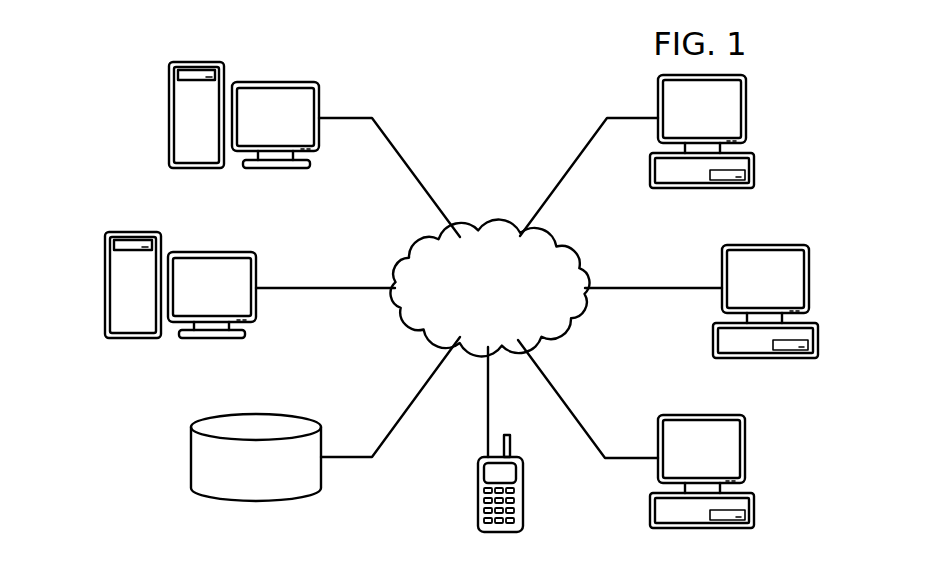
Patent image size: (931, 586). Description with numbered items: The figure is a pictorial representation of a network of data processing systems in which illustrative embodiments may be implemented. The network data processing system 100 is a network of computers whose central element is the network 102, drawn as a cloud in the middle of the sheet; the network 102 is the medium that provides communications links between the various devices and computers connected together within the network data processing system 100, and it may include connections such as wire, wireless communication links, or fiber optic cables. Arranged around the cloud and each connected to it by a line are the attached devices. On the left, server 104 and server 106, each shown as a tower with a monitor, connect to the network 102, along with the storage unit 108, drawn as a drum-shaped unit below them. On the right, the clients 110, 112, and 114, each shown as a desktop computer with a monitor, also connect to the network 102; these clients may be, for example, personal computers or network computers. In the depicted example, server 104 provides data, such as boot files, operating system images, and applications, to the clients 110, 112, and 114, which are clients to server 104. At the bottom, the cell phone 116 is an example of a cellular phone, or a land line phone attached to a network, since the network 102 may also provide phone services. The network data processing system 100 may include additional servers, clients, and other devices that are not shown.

The network data processing system 100 is at (369, 91).
The network 102 is at (480, 232).
The server 104 is at (169, 112).
The server 106 is at (105, 283).
The storage unit 108 is at (191, 458).
The client 110 is at (754, 170).
The client 112 is at (818, 340).
The client 114 is at (754, 512).
The cell phone 116 is at (478, 497).